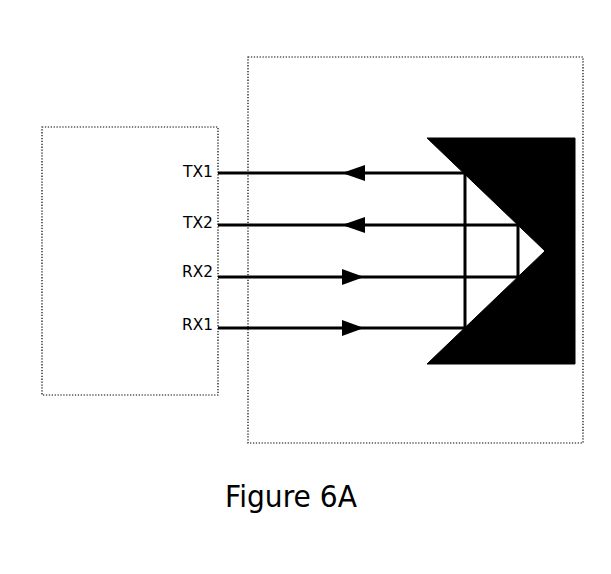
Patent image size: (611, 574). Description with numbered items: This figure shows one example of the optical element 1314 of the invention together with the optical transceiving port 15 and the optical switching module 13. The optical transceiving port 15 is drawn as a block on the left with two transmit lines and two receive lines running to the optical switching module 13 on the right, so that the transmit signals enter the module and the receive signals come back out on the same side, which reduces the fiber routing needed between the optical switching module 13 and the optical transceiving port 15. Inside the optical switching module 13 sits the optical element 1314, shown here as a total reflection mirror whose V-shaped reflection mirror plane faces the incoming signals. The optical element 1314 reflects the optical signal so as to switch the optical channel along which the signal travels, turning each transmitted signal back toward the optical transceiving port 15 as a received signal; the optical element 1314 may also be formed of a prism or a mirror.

The optical transceiving port 15 is at (130, 261).
The optical switching module 13 is at (415, 250).
The optical element 1314 is at (487, 138).